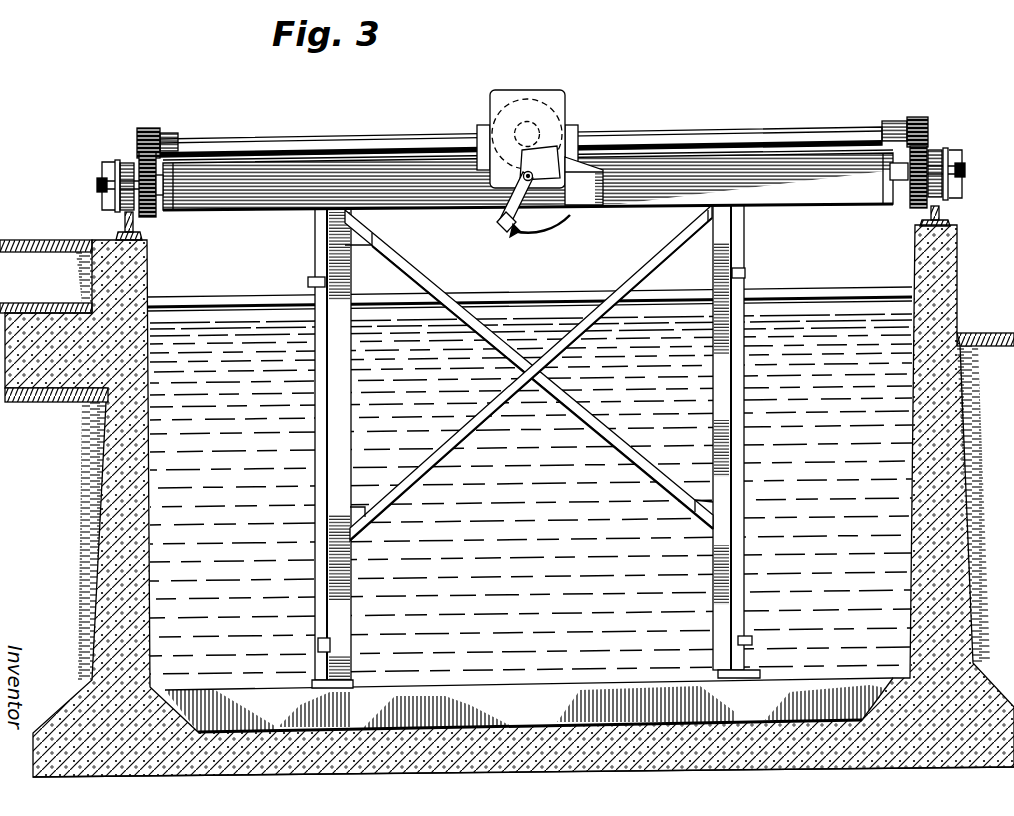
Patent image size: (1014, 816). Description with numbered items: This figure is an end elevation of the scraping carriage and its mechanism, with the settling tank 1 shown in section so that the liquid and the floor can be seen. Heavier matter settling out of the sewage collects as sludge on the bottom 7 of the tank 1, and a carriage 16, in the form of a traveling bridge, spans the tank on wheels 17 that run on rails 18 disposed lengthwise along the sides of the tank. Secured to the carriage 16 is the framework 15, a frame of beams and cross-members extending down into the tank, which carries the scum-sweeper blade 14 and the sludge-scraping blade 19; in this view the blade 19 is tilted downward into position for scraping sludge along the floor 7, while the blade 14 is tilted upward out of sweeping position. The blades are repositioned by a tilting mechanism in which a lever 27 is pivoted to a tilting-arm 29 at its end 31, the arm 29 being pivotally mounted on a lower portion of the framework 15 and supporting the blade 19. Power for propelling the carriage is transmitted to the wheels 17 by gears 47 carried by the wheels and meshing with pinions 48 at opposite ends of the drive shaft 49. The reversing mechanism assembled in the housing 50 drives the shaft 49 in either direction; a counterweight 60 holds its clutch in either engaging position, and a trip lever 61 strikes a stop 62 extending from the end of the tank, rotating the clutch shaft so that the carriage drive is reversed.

The tank 1 is at (103, 238).
The bottom 7 is at (278, 735).
The blade 14 is at (214, 298).
The framework 15 is at (343, 282).
The carriage 16 is at (232, 210).
The wheels 17 is at (125, 163).
The rails 18 is at (136, 232).
The blade 19 is at (328, 718).
The lever 27 is at (315, 254).
The tilting-arm 29 is at (322, 659).
The end 31 is at (322, 676).
The gears 47 is at (155, 212).
The pinions 48 is at (150, 127).
The drive shaft 49 is at (279, 138).
The housing 50 is at (528, 92).
The counterweight 60 is at (537, 157).
The trip lever 61 is at (512, 233).
The stop 62 is at (548, 227).